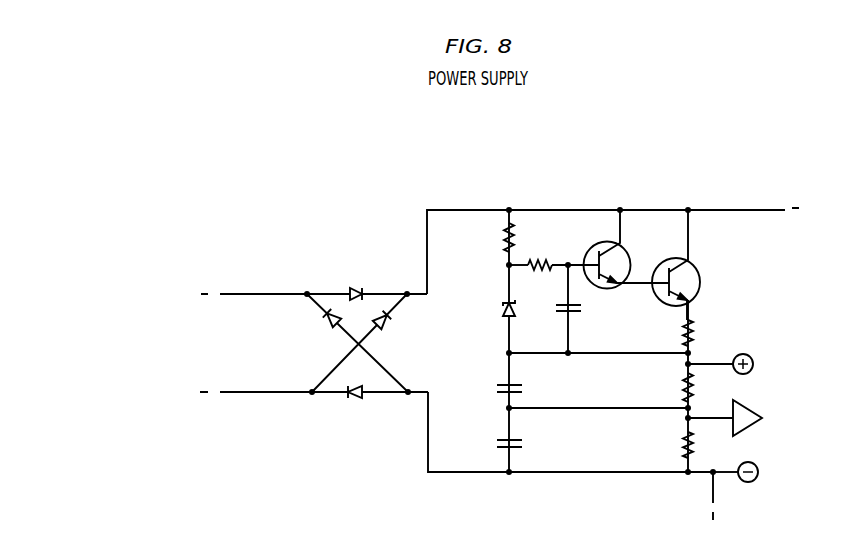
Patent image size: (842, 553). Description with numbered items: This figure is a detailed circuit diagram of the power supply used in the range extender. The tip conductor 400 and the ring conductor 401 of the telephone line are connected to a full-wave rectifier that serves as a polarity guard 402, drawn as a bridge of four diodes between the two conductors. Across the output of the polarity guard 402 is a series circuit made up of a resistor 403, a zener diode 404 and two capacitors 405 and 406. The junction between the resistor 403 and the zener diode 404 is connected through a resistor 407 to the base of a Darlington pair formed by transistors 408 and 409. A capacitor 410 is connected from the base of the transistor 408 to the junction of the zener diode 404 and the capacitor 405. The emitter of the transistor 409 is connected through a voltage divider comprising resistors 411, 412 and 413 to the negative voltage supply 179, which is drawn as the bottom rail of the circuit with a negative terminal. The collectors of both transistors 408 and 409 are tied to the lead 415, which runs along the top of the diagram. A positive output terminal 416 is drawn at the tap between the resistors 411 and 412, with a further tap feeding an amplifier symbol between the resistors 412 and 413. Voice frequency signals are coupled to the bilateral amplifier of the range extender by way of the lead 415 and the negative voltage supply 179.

The tip conductor 400 is at (236, 296).
The ring conductor 401 is at (237, 394).
The full-wave rectifier (polarity guard) 402 is at (366, 283).
The resistor 403 is at (492, 237).
The zener diode 404 is at (492, 311).
The capacitor 405 is at (494, 391).
The capacitor 406 is at (494, 445).
The resistor 407 is at (554, 251).
The transistor 408 is at (628, 256).
The transistor 409 is at (697, 272).
The capacitor 410 is at (583, 311).
The resistor 411 is at (704, 332).
The resistor 412 is at (705, 387).
The resistor 413 is at (705, 444).
The lead 415 is at (766, 207).
The positive output terminal 416 is at (752, 348).
The negative voltage supply 179 is at (714, 496).